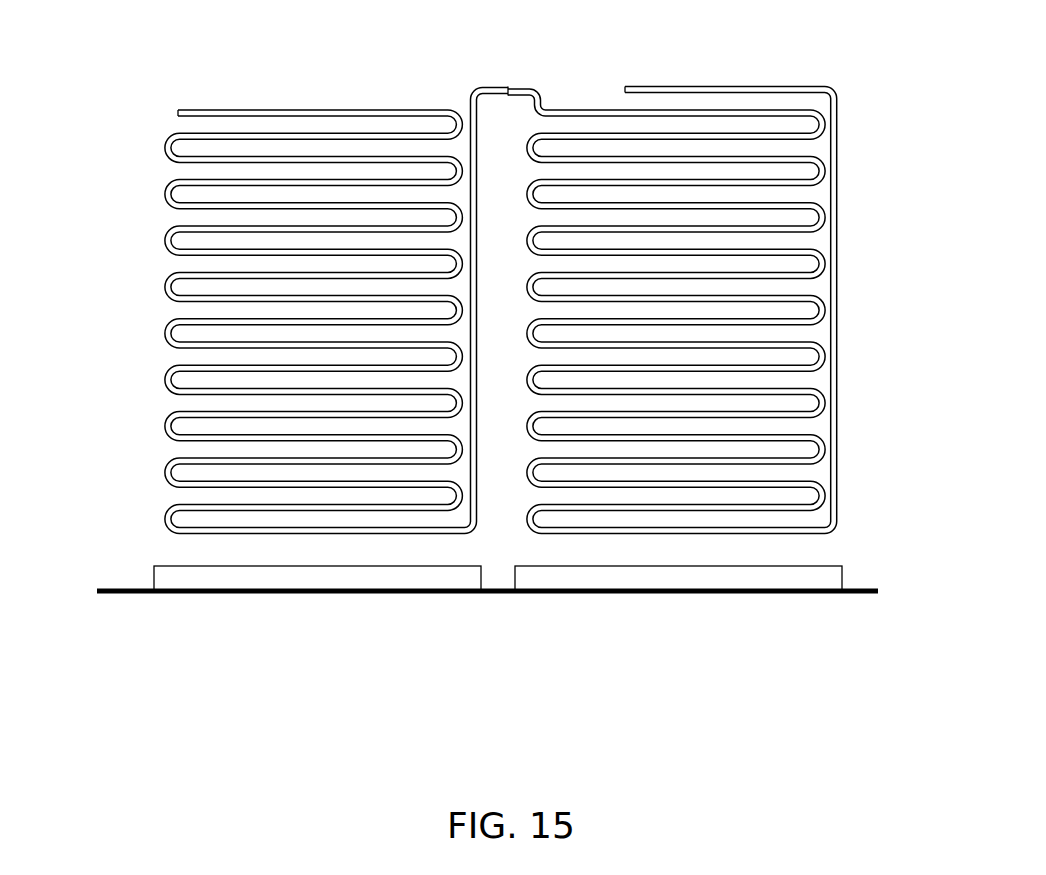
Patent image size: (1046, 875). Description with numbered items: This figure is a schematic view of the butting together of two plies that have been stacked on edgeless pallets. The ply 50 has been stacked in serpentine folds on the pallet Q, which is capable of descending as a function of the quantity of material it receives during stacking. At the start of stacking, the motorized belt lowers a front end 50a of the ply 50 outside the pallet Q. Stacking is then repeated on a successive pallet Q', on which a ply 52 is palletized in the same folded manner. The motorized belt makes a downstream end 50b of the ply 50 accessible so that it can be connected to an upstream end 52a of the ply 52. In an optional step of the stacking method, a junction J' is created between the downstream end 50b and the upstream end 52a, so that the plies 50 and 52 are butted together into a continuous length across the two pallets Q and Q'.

The ply 52 is at (164, 148).
The upstream end of the ply 52a is at (483, 84).
The junction J' is at (519, 50).
The downstream end of the ply 50b is at (543, 107).
The ply 50 is at (838, 281).
The front end of the ply 50a is at (628, 85).
The successive pallet Q' is at (317, 619).
The pallet Q is at (678, 619).